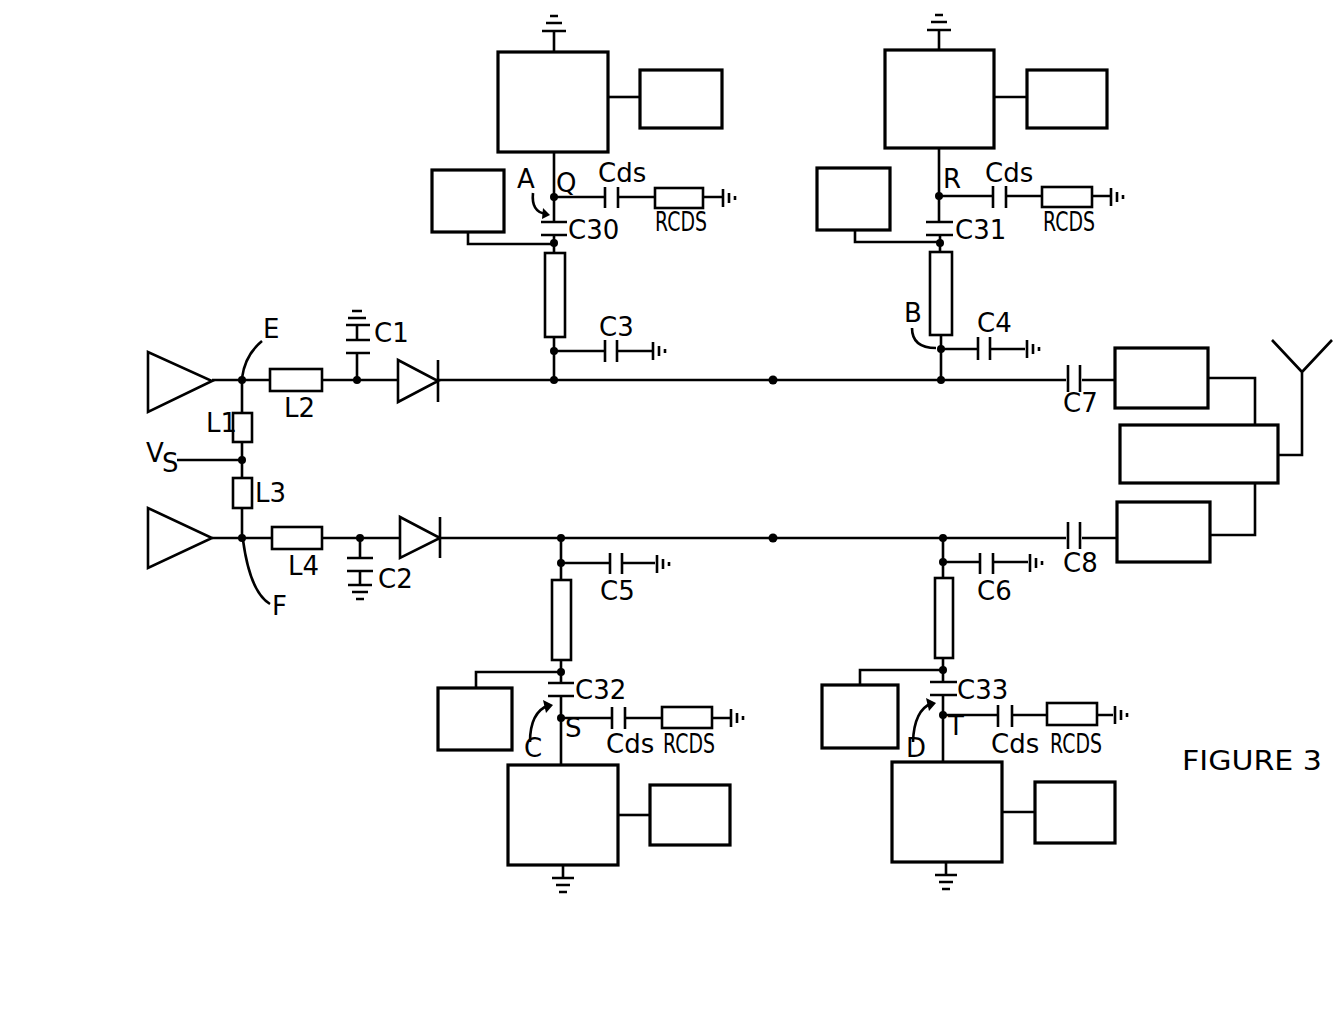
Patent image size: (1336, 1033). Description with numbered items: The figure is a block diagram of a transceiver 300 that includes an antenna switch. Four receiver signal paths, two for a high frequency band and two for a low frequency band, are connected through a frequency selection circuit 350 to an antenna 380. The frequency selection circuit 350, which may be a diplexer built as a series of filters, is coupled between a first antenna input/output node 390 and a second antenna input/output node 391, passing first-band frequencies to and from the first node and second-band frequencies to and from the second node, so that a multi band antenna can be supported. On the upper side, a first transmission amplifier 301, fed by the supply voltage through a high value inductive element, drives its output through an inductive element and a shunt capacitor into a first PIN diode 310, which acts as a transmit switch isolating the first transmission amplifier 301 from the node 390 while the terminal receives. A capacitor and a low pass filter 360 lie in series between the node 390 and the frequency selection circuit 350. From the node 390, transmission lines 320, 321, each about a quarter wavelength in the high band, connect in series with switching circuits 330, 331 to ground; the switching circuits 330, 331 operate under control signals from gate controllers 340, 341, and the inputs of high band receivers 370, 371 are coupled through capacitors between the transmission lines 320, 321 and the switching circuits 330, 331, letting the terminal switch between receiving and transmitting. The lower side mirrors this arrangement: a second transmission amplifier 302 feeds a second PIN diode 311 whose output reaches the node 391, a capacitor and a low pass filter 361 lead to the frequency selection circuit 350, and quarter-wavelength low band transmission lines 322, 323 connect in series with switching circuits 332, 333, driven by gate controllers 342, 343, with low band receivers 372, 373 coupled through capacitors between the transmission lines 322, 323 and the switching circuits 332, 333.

The transceiver 300 is at (307, 115).
The first transmission amplifier 301 is at (153, 352).
The second transmission amplifier 302 is at (162, 572).
The first PIN diode 310 is at (396, 352).
The second PIN diode 311 is at (398, 509).
The transmission line 320 is at (566, 311).
The transmission line 321 is at (952, 305).
The transmission line 322 is at (571, 607).
The transmission line 323 is at (953, 607).
The switching circuit 330 is at (572, 137).
The switching circuit 331 is at (958, 135).
The switching circuit 332 is at (582, 852).
The switching circuit 333 is at (966, 849).
The gate controller 340 is at (722, 95).
The gate controller 341 is at (1107, 95).
The gate controller 342 is at (730, 818).
The gate controller 343 is at (1115, 815).
The frequency selection circuit 350 is at (1120, 468).
The low pass filter 360 is at (1200, 348).
The low pass filter 361 is at (1208, 548).
The receiver 370 is at (432, 205).
The receiver 371 is at (818, 200).
The receiver 372 is at (438, 712).
The receiver 373 is at (822, 712).
The antenna 380 is at (1302, 340).
The first antenna input/output node 390 is at (772, 397).
The second antenna input/output node 391 is at (772, 523).